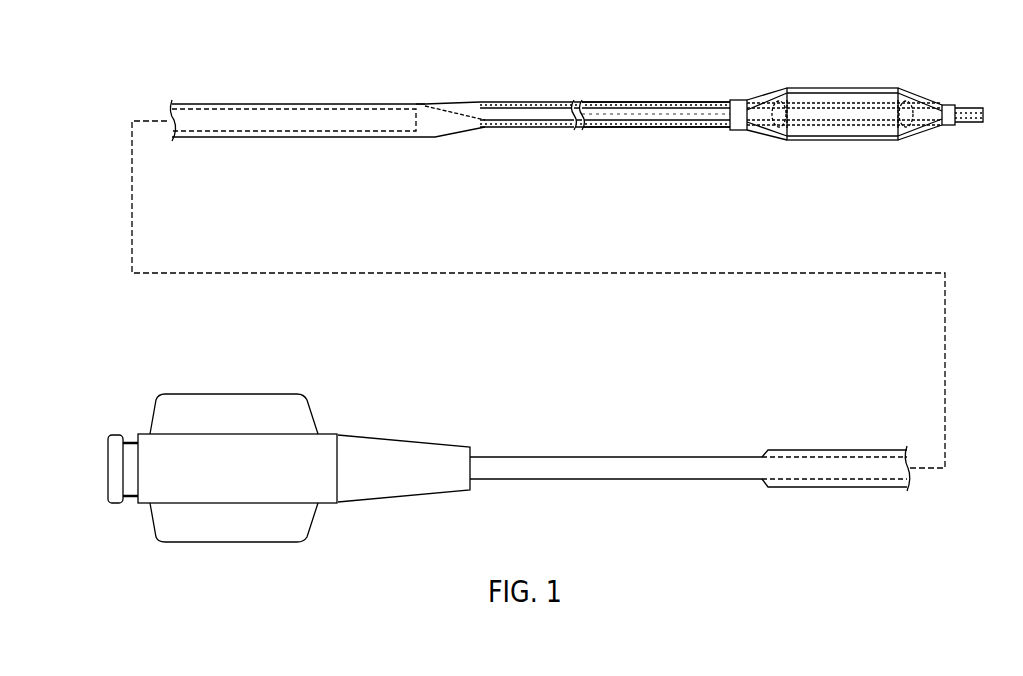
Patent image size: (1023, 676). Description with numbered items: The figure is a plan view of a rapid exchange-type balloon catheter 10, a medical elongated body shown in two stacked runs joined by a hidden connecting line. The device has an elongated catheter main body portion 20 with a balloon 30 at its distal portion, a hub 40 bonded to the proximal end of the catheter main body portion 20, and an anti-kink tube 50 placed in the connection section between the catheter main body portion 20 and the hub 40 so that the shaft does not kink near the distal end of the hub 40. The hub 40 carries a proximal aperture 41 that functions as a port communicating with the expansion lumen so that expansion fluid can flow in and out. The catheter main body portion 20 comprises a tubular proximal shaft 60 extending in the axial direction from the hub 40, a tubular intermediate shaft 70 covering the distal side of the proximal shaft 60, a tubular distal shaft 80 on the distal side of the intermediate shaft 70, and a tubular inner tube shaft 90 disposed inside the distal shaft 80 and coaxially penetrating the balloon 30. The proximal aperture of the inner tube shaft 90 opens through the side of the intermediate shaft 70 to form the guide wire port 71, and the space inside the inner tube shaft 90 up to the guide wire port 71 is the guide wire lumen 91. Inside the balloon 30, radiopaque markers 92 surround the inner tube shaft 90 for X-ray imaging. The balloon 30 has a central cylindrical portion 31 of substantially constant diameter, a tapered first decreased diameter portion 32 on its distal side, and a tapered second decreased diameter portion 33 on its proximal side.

The balloon catheter 10 is at (145, 55).
The catheter main body portion 20 is at (250, 104).
The balloon 30 is at (862, 87).
The cylindrical portion 31 is at (843, 88).
The first decreased diameter portion 32 is at (925, 100).
The second decreased diameter portion 33 is at (760, 100).
The hub 40 is at (173, 445).
The proximal aperture 41 is at (112, 440).
The anti-kink tube 50 is at (410, 462).
The proximal shaft 60 is at (368, 108).
The intermediate shaft 70 is at (424, 104).
The guide wire port 71 is at (462, 104).
The distal shaft 80 is at (638, 101).
The inner tube shaft 90 is at (537, 101).
The guide wire lumen 91 is at (671, 120).
The radiopaque marker 92 is at (782, 141).